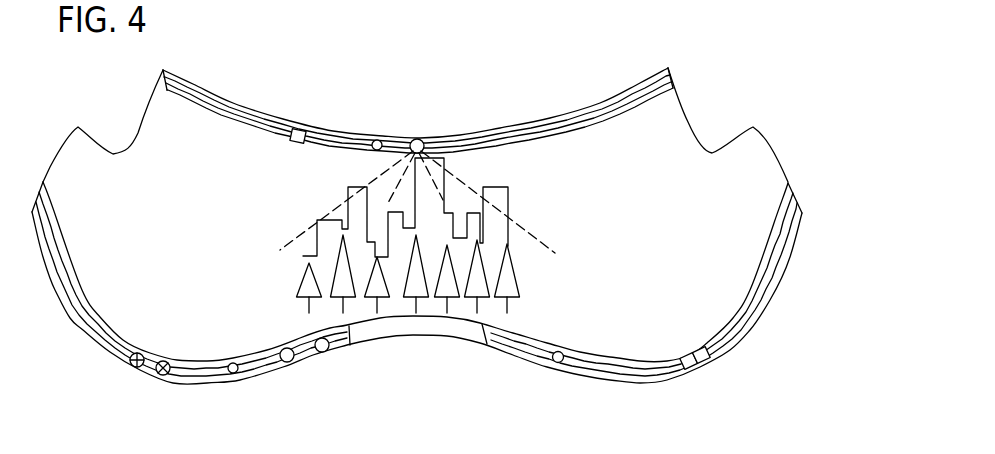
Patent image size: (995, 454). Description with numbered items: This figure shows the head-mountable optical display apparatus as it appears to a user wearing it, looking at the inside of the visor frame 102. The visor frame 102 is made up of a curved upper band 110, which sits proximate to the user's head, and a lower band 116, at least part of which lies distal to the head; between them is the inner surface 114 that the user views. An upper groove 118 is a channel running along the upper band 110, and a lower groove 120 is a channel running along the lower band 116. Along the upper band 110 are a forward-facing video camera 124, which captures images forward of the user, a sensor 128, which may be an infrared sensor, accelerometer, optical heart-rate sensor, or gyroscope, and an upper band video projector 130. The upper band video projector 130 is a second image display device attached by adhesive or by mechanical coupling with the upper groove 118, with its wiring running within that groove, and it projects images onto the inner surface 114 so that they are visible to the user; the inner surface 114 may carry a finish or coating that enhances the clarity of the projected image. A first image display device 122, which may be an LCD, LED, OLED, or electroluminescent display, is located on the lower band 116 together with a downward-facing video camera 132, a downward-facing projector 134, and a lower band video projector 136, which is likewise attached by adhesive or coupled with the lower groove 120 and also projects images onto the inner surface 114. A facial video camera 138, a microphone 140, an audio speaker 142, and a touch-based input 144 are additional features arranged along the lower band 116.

The visor frame 102 is at (229, 99).
The upper band 110 is at (553, 128).
The inner surface 114 is at (658, 157).
The lower band 116 is at (602, 380).
The upper groove 118 is at (465, 145).
The lower groove 120 is at (633, 373).
The first image display device 122 is at (415, 338).
The forward-facing video camera 124 is at (380, 140).
The sensor 128 is at (300, 130).
The upper band video projector 130 is at (419, 139).
The downward-facing video camera 132 is at (230, 375).
The downward-facing projector 134 is at (282, 363).
The lower band video projector 136 is at (335, 353).
The facial video camera 138 is at (557, 364).
The microphone 140 is at (162, 377).
The audio speaker 142 is at (127, 363).
The touch-based input 144 is at (705, 371).